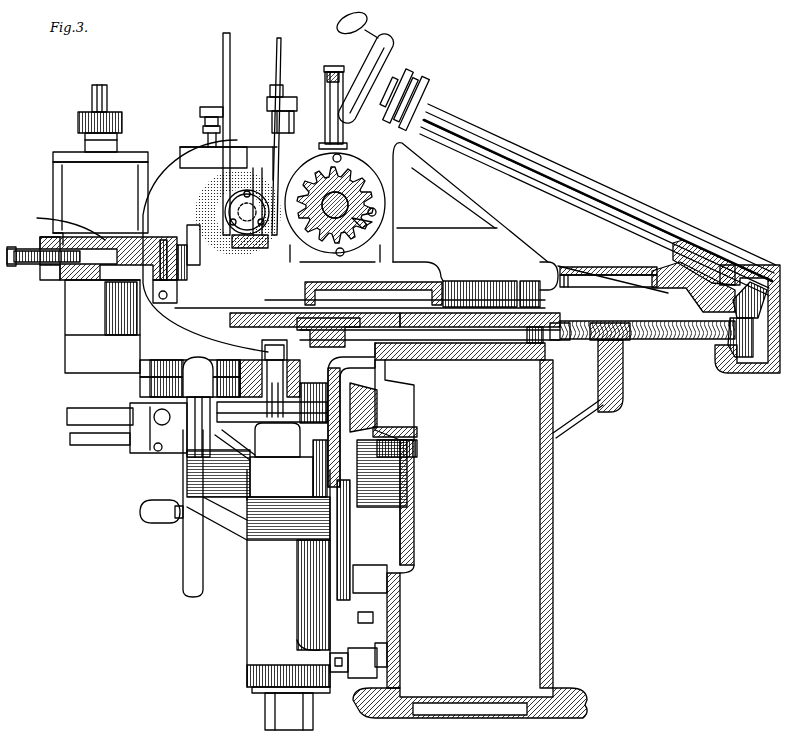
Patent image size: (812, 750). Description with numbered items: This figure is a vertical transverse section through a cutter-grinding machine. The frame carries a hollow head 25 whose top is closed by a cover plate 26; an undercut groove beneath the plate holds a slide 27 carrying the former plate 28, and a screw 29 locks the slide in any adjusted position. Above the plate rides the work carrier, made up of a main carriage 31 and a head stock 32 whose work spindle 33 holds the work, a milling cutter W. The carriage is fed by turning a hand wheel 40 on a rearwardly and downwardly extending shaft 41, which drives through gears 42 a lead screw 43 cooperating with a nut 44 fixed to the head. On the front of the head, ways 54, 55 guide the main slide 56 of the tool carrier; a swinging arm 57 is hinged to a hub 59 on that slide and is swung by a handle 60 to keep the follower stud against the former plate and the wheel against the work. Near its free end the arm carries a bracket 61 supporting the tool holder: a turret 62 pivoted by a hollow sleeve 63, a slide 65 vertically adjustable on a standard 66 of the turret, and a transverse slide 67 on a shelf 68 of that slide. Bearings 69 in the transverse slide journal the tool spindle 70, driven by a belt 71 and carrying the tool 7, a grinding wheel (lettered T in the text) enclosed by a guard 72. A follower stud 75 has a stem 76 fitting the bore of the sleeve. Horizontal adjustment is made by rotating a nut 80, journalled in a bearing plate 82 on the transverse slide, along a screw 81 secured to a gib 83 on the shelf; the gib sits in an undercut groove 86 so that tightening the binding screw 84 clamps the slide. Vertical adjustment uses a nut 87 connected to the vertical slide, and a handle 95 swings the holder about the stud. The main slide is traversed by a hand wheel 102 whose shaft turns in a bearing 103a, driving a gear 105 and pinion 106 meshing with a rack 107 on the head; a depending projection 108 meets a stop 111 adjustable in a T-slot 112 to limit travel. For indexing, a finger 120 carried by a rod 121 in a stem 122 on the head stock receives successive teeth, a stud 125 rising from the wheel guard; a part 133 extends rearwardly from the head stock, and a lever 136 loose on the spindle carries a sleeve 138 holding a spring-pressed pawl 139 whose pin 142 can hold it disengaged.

The work holder body 7 is at (232, 209).
The hollow head 25 is at (553, 522).
The cover plate 26 is at (490, 320).
The slide 27 is at (348, 322).
The former plate 28 is at (312, 348).
The screw 29 is at (505, 340).
The main carriage 31 is at (413, 283).
The head stock 32 is at (383, 193).
The work spindle 33 is at (352, 192).
The milling cutter W is at (372, 222).
The hand wheel 40 is at (385, 42).
The shaft 41 is at (590, 200).
The gears 42 is at (755, 345).
The lead screw 43 is at (665, 345).
The nut 44 is at (628, 370).
The way 54 is at (370, 392).
The way 55 is at (367, 578).
The slide 56 is at (355, 528).
The swinging arm 57 is at (255, 593).
The hub 59 is at (300, 642).
The handle 60 is at (196, 360).
The bracket 61 is at (140, 390).
The turret 62 is at (140, 367).
The hollow sleeve 63 is at (250, 358).
The slide 65 is at (70, 197).
The standard 66 is at (72, 352).
The transverse slide 67 is at (58, 227).
The shelf 68 is at (104, 298).
The bearings 69 is at (235, 212).
The tool spindle 70 is at (238, 213).
The belt 71 is at (229, 45).
The guard 72 is at (207, 190).
The follower stud 75 is at (265, 346).
The shank 76 is at (268, 407).
The nut 80 is at (42, 268).
The screw 81 is at (27, 250).
The bearing plate 82 is at (100, 272).
The gib 83 is at (103, 282).
The binding screw 84 is at (156, 290).
The undercut groove 86 is at (152, 236).
The nut 87 is at (112, 112).
The handle 95 is at (70, 422).
The hand wheel 102 is at (183, 547).
The bearing 103a is at (260, 495).
The gear 105 is at (373, 503).
The pinion 106 is at (415, 457).
The rack 107 is at (395, 433).
The depending projection 108 is at (373, 618).
The stop 111 is at (380, 670).
The T-slot 112 is at (390, 652).
The indexing finger 120 is at (281, 150).
The rod 121 is at (283, 100).
The stem 122 is at (247, 157).
The stud 125 is at (208, 107).
The part 133 is at (470, 240).
The lever 136 is at (344, 146).
The barrel 138 is at (310, 110).
The pawl 139 is at (334, 66).
The pin 142 is at (330, 75).